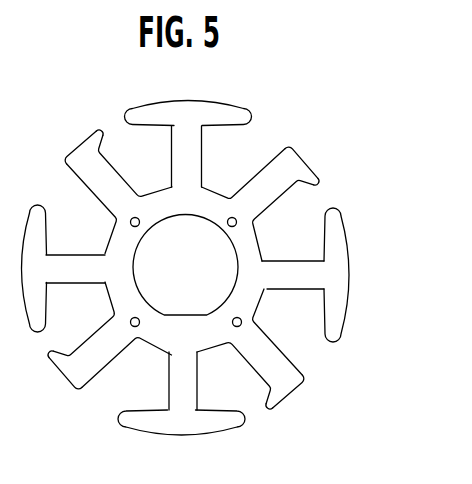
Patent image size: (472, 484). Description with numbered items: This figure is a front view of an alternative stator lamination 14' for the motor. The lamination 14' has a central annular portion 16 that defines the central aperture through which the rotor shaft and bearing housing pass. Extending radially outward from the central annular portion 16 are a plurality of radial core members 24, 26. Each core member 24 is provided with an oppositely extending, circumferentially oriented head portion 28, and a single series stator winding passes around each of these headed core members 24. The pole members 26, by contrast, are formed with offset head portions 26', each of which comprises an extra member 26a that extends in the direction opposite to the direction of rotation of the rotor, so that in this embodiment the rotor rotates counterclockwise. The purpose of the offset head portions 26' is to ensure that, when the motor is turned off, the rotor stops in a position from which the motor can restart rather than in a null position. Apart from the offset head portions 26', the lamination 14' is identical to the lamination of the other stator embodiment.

The stator lamination 14' is at (238, 191).
The central annular portion 16 is at (210, 197).
The radial core member 24 is at (75, 255).
The pole member 26 is at (183, 269).
The extra member 26a is at (101, 123).
The offset head portion 26' is at (175, 262).
The head portion 28 is at (188, 100).